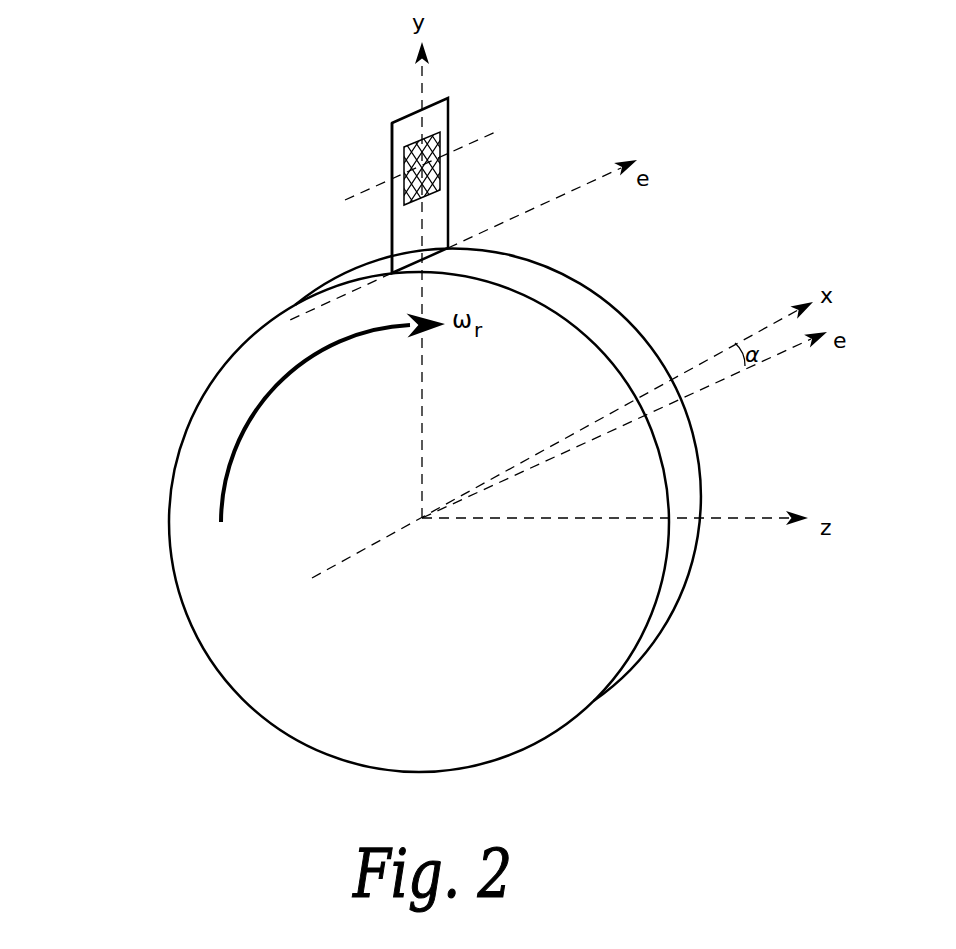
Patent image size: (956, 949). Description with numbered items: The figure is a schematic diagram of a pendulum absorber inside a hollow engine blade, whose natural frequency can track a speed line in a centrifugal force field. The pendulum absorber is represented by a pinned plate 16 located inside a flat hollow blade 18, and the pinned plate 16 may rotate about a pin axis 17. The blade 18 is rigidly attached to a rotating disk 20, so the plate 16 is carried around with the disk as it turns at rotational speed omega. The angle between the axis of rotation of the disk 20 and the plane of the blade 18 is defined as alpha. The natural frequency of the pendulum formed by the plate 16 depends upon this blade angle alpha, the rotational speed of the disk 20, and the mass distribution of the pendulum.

The pinned plate 16 is at (470, 124).
The pin axis 17 is at (353, 178).
The flat hollow blade 18 is at (372, 138).
The rotating disk 20 is at (185, 425).